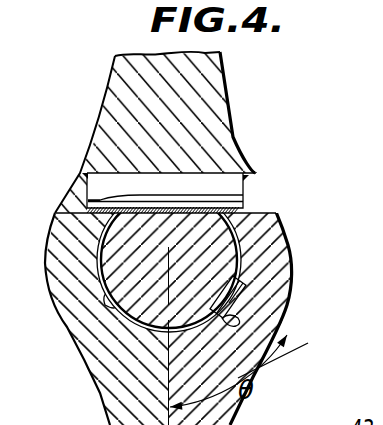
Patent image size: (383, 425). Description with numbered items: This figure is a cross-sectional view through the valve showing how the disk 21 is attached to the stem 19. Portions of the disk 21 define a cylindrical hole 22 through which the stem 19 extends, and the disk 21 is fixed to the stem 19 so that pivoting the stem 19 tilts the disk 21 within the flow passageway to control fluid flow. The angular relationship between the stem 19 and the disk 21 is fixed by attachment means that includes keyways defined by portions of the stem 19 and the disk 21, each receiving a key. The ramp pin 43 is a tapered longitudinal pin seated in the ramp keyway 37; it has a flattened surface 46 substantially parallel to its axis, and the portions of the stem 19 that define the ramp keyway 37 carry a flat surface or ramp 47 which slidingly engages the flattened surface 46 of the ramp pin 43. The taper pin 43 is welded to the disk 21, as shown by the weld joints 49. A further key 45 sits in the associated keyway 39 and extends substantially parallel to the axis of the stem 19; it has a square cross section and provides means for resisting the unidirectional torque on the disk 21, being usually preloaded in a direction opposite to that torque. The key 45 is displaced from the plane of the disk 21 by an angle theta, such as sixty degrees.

The stem 19 is at (208, 236).
The disk 21 is at (193, 82).
The cylindrical hole 22 is at (112, 310).
The ramp keyway 37 is at (217, 181).
The keyway 39 is at (222, 318).
The ramp pin 43 is at (187, 183).
The key 45 is at (200, 280).
The flattened surface 46 is at (96, 211).
The ramp 47 is at (88, 200).
The weld joints 49 is at (85, 175).